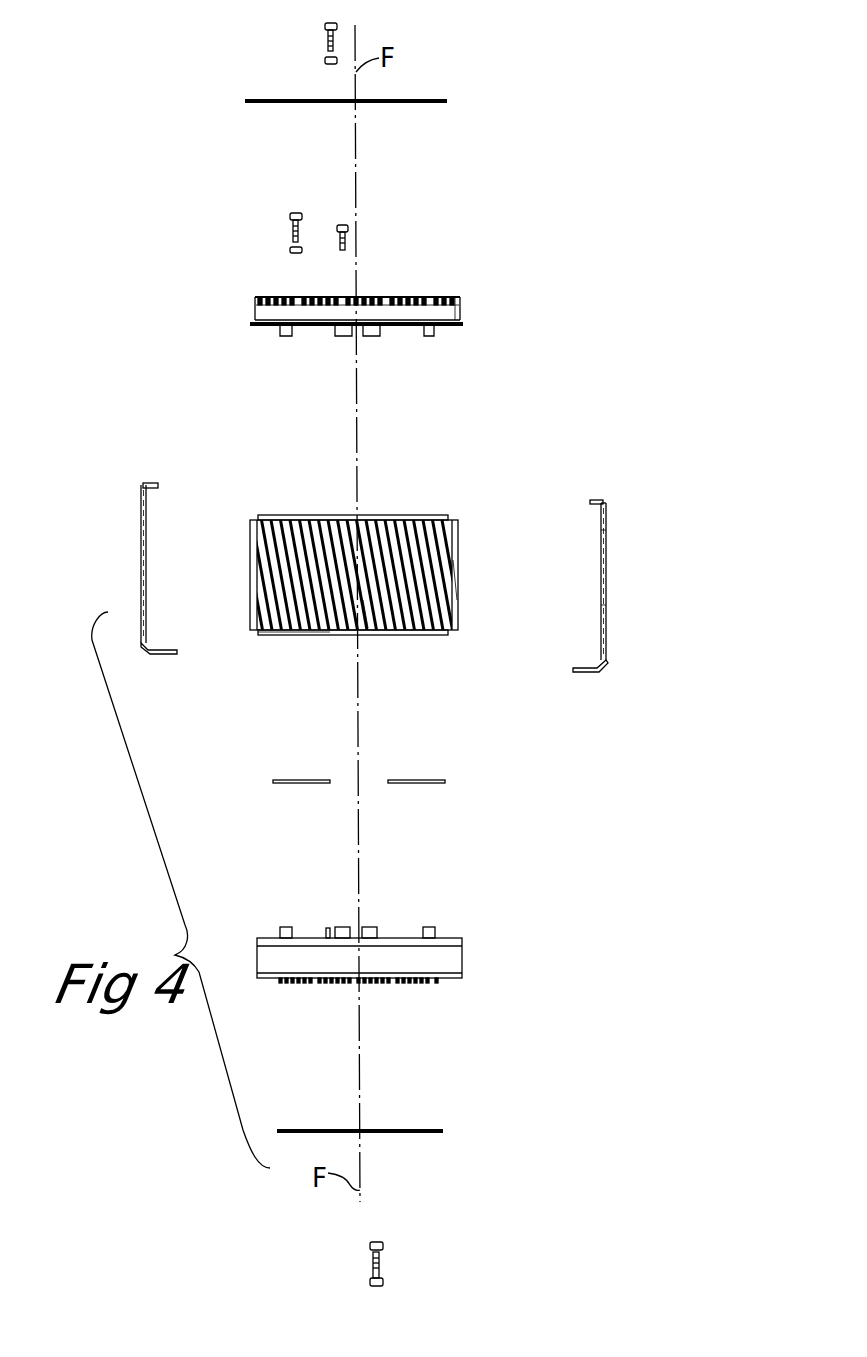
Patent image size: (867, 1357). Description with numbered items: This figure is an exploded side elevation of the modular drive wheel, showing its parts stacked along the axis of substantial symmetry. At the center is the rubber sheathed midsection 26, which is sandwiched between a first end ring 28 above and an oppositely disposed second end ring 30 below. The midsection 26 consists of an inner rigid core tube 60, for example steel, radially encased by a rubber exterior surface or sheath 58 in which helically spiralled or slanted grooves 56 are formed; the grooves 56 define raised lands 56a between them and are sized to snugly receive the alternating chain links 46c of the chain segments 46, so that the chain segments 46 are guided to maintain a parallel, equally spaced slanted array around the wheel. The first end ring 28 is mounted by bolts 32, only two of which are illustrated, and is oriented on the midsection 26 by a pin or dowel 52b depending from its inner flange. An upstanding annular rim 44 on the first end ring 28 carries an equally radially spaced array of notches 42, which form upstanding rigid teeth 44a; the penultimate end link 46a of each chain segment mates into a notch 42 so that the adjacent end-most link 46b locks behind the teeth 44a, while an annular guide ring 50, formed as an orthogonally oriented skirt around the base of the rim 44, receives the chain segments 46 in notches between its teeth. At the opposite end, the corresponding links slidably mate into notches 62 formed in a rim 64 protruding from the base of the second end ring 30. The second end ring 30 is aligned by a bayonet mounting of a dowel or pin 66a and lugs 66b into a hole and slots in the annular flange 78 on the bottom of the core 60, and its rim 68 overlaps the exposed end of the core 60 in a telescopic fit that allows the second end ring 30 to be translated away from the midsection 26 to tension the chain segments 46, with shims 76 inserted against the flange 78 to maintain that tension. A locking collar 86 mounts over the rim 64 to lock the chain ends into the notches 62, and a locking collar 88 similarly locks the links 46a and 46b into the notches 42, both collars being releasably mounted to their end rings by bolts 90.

The rubber sheathed midsection 26 is at (403, 569).
The first end ring 28 is at (361, 299).
The second end ring 30 is at (417, 944).
The bolts 32 is at (349, 228).
The notches 42 is at (398, 298).
The upstanding annular rim 44 is at (459, 308).
The upstanding rigid teeth 44a is at (425, 298).
The chain segments 46 is at (394, 559).
The penultimate end link 46a is at (604, 500).
The end-most link 46b is at (592, 500).
The alternating chain links 46c is at (610, 532).
The annular guide ring 50 is at (247, 316).
The pin or dowel 52b is at (374, 356).
The helically spiralled or slanted grooves 56 is at (347, 520).
The raised lands 56a is at (363, 628).
The rubber exterior surface or sheath 58 is at (462, 585).
The core tube 60 is at (432, 515).
The notches 62 is at (418, 984).
The rim 64 is at (446, 985).
The dowel or pin 66a is at (328, 927).
The lugs 66b is at (340, 927).
The rim 68 is at (462, 938).
The shims 76 is at (300, 783).
The annular flange 78 is at (313, 633).
The locking collar 86 is at (443, 1130).
The locking collar 88 is at (447, 101).
The bolts 90 is at (337, 31).